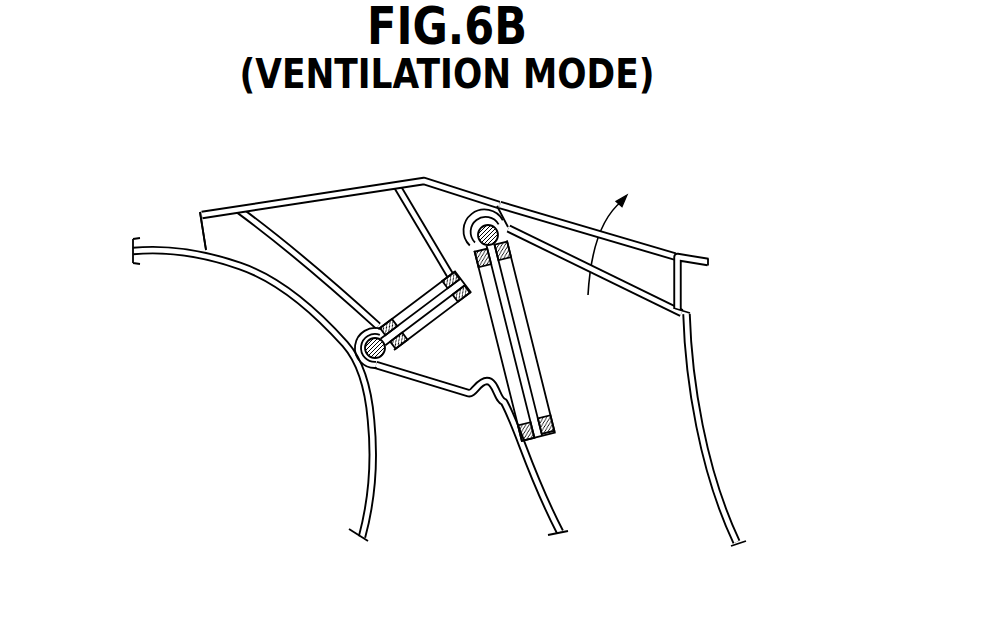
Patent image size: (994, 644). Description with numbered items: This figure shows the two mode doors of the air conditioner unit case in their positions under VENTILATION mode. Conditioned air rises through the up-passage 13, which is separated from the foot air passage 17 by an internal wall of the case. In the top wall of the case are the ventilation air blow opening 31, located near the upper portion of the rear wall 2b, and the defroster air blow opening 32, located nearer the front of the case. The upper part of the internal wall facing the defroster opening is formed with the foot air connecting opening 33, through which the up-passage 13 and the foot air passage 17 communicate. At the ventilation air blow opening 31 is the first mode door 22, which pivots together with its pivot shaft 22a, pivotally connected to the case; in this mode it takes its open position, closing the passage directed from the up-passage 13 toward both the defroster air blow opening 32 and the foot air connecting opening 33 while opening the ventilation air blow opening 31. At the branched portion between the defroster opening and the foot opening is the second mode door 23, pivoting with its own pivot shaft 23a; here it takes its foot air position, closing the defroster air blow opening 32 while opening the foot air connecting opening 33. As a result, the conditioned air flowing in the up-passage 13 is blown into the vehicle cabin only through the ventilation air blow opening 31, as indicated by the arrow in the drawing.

The defroster air blow opening 32 is at (327, 213).
The ventilation air blow opening 31 is at (645, 257).
The pivot shaft 22a is at (500, 207).
The first mode door 22 is at (528, 335).
The second mode door 23 is at (412, 312).
The pivot shaft 23a is at (348, 343).
The foot air connecting opening 33 is at (426, 386).
The rear wall 2b is at (698, 412).
The up-passage 13 is at (637, 471).
The foot air passage 17 is at (461, 510).